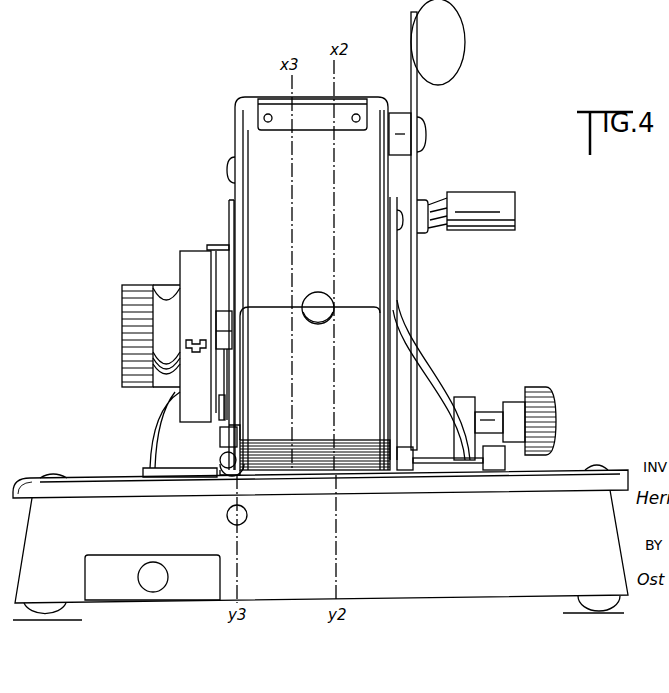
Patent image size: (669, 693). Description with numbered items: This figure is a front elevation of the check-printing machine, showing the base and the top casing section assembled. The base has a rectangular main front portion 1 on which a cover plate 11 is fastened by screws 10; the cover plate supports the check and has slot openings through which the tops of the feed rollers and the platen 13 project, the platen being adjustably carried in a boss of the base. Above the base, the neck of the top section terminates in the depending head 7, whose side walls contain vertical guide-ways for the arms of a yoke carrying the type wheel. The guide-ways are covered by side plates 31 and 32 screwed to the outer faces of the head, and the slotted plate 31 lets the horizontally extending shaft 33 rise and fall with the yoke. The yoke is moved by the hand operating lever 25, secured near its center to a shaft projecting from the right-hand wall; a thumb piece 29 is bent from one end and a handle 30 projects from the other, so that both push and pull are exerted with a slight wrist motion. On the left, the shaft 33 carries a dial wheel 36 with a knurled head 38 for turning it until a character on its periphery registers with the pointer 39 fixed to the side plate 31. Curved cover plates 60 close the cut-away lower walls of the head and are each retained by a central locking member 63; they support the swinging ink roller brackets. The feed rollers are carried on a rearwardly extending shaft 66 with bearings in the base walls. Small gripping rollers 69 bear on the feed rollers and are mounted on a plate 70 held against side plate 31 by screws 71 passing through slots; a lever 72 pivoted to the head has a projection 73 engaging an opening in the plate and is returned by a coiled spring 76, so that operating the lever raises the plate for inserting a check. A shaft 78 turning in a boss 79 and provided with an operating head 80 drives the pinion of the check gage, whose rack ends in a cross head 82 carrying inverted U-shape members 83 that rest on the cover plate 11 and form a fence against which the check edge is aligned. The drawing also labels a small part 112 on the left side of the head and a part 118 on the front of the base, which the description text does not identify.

The main front portion 1 is at (455, 551).
The depending head 7 is at (311, 283).
The screws 10 is at (598, 468).
The cover plate 11 is at (525, 480).
The platen 13 is at (308, 474).
The hand operating lever 25 is at (419, 104).
The thumb piece 29 is at (466, 22).
The handle 30 is at (500, 205).
The side plate 31 is at (236, 256).
The side plate 32 is at (399, 262).
The horizontally extending shaft 33 is at (236, 314).
The dial wheel 36 is at (182, 252).
The knurled head 38 is at (138, 286).
The pointer 39 is at (212, 243).
The cover plates 60 is at (310, 373).
The locking member 63 is at (312, 304).
The rearwardly extending shaft 66 is at (245, 518).
The gripping rollers 69 is at (224, 470).
The plate 70 is at (240, 434).
The screws 71 is at (229, 378).
The lever 72 is at (222, 433).
The projection 73 is at (236, 418).
The coiled spring 76 is at (222, 456).
The shaft 78 is at (483, 415).
The boss 79 is at (465, 397).
The operating head 80 is at (548, 394).
The cross head 82 is at (433, 466).
The inverted U-shape members 83 is at (483, 455).
The button 112 is at (228, 168).
The plate 118 is at (110, 568).